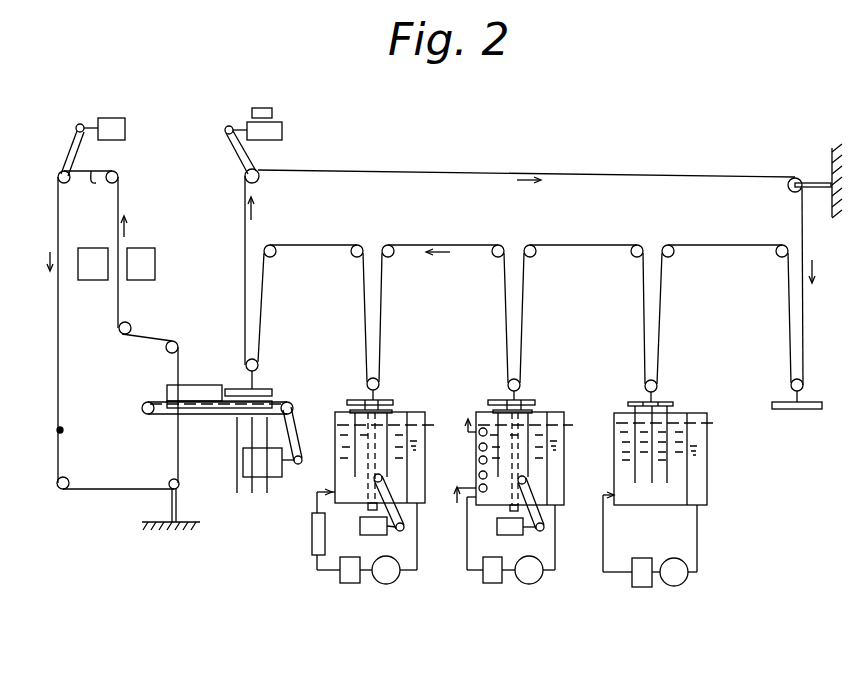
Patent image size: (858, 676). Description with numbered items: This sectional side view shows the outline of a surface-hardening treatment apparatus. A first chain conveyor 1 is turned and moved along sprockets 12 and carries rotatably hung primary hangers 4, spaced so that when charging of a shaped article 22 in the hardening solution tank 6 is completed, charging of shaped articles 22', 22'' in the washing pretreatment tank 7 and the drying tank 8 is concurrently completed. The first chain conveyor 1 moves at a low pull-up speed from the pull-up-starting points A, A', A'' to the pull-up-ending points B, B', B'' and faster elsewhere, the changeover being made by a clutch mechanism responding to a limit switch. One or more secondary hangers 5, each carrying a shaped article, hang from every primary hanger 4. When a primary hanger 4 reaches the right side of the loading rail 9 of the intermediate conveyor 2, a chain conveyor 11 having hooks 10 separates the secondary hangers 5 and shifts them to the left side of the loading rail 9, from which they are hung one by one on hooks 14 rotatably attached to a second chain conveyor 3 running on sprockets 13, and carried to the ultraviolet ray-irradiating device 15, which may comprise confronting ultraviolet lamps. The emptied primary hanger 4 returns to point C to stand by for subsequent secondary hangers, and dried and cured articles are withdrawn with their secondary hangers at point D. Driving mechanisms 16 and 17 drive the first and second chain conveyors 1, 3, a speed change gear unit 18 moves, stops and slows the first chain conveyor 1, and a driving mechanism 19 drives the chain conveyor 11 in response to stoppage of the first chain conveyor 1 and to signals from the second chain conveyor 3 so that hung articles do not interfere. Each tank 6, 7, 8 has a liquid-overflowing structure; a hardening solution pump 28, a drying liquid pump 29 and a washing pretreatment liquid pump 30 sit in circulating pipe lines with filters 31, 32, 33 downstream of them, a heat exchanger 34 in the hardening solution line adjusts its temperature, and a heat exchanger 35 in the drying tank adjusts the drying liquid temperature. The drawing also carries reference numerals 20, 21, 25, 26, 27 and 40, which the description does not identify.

The first chain conveyor 1 is at (490, 170).
The intermediate conveyor 2 is at (230, 421).
The second chain conveyor 3 is at (121, 204).
The primary hanger 4 is at (393, 401).
The secondary hanger 5 is at (353, 398).
The hardening solution tank 6 is at (343, 505).
The washing pretreatment tank 7 is at (482, 507).
The drying tank 8 is at (652, 507).
The loading rail 9 is at (210, 385).
The hooks 10 is at (232, 433).
The chain conveyor 11 is at (158, 415).
The sprockets 12 is at (259, 170).
The sprockets 13 is at (118, 171).
The hooks 14 is at (58, 333).
The ultraviolet ray-irradiating device 15 is at (95, 281).
The driving mechanism 16 is at (283, 131).
The driving mechanism 17 is at (115, 118).
The speed change gear unit 18 is at (265, 108).
The driving mechanism 19 is at (278, 478).
The fixed roller 20 is at (802, 179).
The pivot support 21 is at (161, 530).
The shaped article 22 is at (410, 495).
The shaped article 22' is at (549, 494).
The shaped article 22'' is at (722, 469).
The electrolyte 25 is at (425, 413).
The electrolyte 26 is at (542, 428).
The electrolyte 27 is at (682, 428).
The hardening solution pump 28 is at (386, 585).
The drying liquid pump 29 is at (529, 585).
The washing pretreatment liquid pump 30 is at (674, 587).
The filter 31 is at (338, 586).
The filter 32 is at (482, 586).
The filter 33 is at (630, 586).
The heat exchanger 34 is at (310, 538).
The heat exchanger 35 is at (478, 446).
The electrode mounting plate 40 is at (347, 402).
The pull-up-starting point A is at (393, 373).
The pull-up-starting point A' is at (538, 371).
The pull-up-starting point A'' is at (676, 372).
The pull-up-ending point B is at (312, 313).
The pull-up-ending point B' is at (443, 314).
The pull-up-ending point B'' is at (582, 314).
The stand-by point C is at (803, 379).
The withdrawal point D is at (74, 432).